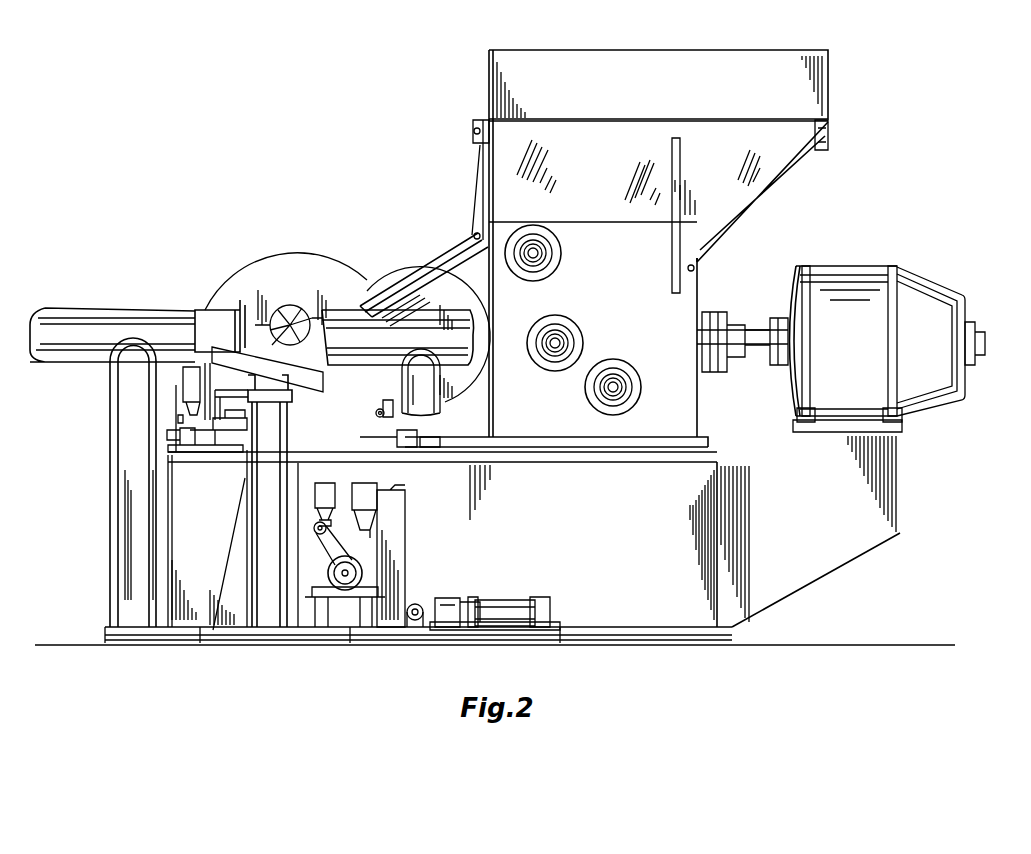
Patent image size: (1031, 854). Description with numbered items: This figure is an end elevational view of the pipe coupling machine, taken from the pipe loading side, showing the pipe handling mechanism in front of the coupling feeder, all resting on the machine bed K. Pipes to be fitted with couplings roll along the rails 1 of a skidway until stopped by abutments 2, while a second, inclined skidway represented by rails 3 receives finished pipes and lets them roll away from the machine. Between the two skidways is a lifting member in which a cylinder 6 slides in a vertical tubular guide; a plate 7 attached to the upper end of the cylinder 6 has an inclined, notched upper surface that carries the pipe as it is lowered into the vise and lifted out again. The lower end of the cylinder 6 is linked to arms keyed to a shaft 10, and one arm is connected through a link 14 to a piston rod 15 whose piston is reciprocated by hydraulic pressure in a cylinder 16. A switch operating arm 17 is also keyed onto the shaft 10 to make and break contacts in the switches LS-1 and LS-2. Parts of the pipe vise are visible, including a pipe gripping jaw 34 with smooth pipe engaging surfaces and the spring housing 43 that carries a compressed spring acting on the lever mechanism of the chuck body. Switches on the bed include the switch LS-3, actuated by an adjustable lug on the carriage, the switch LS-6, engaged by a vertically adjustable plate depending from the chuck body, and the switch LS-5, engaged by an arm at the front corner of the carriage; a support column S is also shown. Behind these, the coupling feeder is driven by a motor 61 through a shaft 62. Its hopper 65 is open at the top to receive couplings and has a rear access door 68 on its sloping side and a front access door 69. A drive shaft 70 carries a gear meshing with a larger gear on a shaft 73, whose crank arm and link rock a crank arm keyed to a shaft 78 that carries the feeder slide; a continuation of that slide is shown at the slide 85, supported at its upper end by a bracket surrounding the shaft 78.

The rails 1 is at (90, 342).
The abutments 2 is at (233, 306).
The rails 3 is at (473, 357).
The cylinder 6 is at (566, 160).
The plate 7 is at (302, 380).
The shaft 10 is at (348, 580).
The link 14 is at (413, 606).
The piston rod 15 is at (428, 606).
The cylinder 16 is at (498, 597).
The switch operating arm 17 is at (335, 552).
The pipe gripping jaw 34 is at (306, 328).
The spring housing 43 is at (195, 385).
The motor 61 is at (838, 283).
The shaft 62 is at (756, 330).
The hopper 65 is at (692, 81).
The access door 68 is at (768, 193).
The front access door 69 is at (481, 188).
The drive shaft 70 is at (614, 384).
The shaft 73 is at (557, 340).
The shaft 78 is at (538, 251).
The slide 85 is at (455, 262).
The bed K is at (595, 528).
The support column S is at (263, 468).
The switch LS-1 is at (328, 497).
The switch LS-2 is at (366, 502).
The switch LS-3 is at (405, 447).
The switch LS-5 is at (178, 440).
The switch LS-6 is at (380, 418).